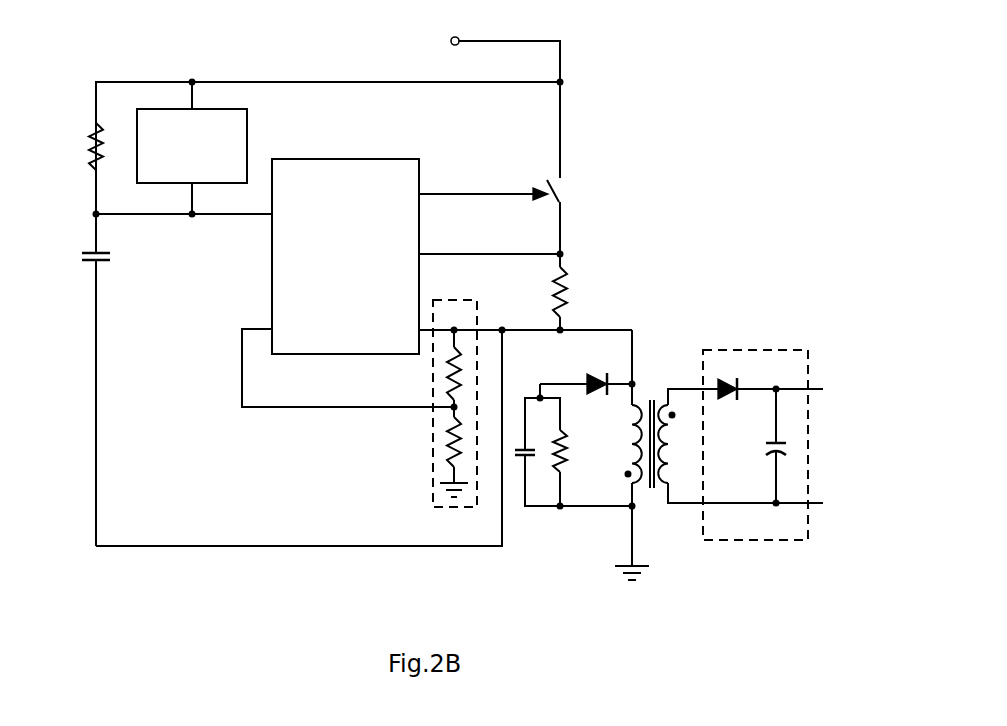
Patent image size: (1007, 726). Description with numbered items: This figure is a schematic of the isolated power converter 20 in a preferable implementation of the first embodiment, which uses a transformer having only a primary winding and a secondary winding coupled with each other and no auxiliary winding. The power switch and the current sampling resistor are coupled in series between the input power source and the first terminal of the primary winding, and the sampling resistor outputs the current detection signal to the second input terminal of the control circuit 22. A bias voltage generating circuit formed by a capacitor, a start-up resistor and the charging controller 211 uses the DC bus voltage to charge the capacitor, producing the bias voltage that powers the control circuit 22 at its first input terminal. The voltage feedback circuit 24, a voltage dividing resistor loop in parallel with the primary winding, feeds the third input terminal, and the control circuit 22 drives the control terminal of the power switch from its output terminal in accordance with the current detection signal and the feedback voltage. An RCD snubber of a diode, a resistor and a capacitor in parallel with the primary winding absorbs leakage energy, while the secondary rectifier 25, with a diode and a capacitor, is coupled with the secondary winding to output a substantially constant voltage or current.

The isolated power converter 20 is at (90, 31).
The charging controller 211 is at (207, 155).
The control circuit 22 is at (393, 159).
The voltage feedback circuit 24 is at (433, 454).
The secondary rectifier 25 is at (745, 350).